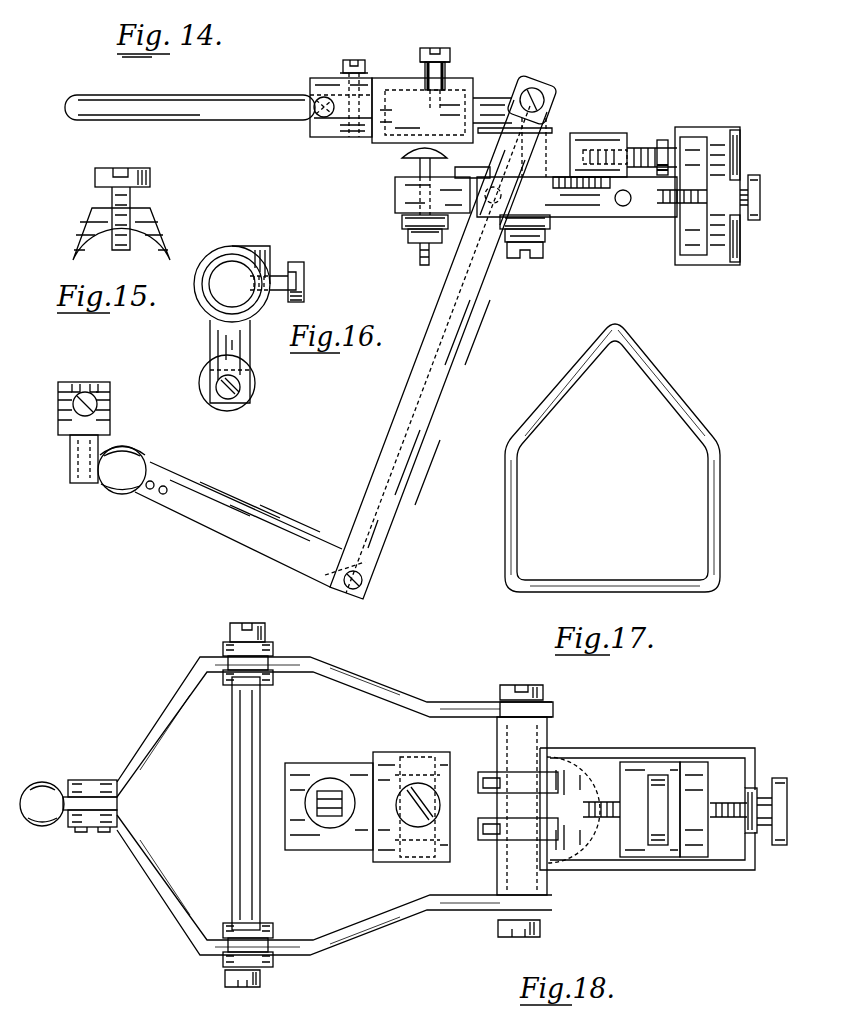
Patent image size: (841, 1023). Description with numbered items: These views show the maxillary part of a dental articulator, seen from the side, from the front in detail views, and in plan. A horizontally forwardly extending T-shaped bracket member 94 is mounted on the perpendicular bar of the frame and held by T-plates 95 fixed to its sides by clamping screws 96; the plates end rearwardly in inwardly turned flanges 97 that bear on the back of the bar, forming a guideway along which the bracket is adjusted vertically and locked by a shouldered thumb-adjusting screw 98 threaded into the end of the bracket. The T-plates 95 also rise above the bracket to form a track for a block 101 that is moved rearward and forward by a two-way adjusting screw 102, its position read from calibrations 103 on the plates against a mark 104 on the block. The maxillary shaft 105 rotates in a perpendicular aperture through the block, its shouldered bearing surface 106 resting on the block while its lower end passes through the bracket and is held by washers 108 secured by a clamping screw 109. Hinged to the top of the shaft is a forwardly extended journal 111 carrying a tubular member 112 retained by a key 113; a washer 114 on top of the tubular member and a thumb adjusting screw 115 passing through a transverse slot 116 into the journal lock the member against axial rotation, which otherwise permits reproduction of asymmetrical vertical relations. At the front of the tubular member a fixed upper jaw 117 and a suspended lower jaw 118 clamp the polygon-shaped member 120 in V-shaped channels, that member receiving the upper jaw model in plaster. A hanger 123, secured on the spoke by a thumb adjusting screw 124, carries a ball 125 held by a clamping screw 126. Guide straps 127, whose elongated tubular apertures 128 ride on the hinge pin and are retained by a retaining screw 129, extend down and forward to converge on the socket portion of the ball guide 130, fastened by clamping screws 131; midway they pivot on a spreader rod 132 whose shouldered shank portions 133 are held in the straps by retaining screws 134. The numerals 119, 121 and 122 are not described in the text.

In FIG. 14, the T-shaped bracket member 94 is at (405, 190).
In FIG. 18, the T-shaped bracket member 94 is at (694, 858).
In FIG. 14, the T-plates 95 is at (705, 130).
In FIG. 18, the T-plates 95 is at (672, 752).
In FIG. 14, the clamping screws 96 is at (625, 207).
In FIG. 14, the flanges 97 is at (740, 150).
In FIG. 18, the flanges 97 is at (752, 785).
In FIG. 14, the thumb-adjusting screw 98 is at (760, 185).
In FIG. 18, the thumb-adjusting screw 98 is at (780, 770).
In FIG. 14, the block 101 is at (615, 133).
In FIG. 14, the two-way adjusting screw 102 is at (662, 140).
In FIG. 18, the two-way adjusting screw 102 is at (658, 845).
In FIG. 14, the calibrations 103 is at (595, 190).
In FIG. 14, the mark 104 is at (574, 140).
In FIG. 14, the maxillary shaft 105 is at (558, 150).
In FIG. 18, the shouldered bearing surface 106 is at (558, 866).
In FIG. 14, the washers 108 is at (550, 222).
In FIG. 14, the clamping screw 109 is at (543, 254).
In FIG. 14, the journal 111 is at (478, 104).
In FIG. 14, the tubular member 112 is at (383, 86).
In FIG. 14, the key 113 is at (476, 140).
In FIG. 14, the washer 114 is at (446, 75).
In FIG. 15, the washer 114 is at (140, 230).
In FIG. 14, the thumb adjusting screw 115 is at (450, 50).
In FIG. 15, the thumb adjusting screw 115 is at (152, 172).
In FIG. 18, the thumb adjusting screw 115 is at (418, 830).
In FIG. 18, the transverse slot 116 is at (405, 830).
In FIG. 14, the upper jaw 117 is at (310, 80).
In FIG. 18, the upper jaw 117 is at (340, 842).
In FIG. 14, the lower jaw 118 is at (362, 125).
In FIG. 14, the set screw 119 is at (362, 64).
In FIG. 18, the set screw 119 is at (330, 790).
In FIG. 14, the polygon-shaped member 120 is at (158, 95).
In FIG. 17, the polygon-shaped member 120 is at (506, 572).
In FIG. 14, the knob 121 is at (420, 167).
In FIG. 14, the lock nut 122 is at (402, 236).
In FIG. 14, the hanger 123 is at (98, 432).
In FIG. 16, the hanger 123 is at (280, 236).
In FIG. 14, the thumb adjusting screw 124 is at (98, 390).
In FIG. 16, the thumb adjusting screw 124 is at (305, 292).
In FIG. 14, the ball 125 is at (115, 452).
In FIG. 16, the ball 125 is at (240, 385).
In FIG. 14, the clamping screw 126 is at (70, 466).
In FIG. 16, the clamping screw 126 is at (245, 405).
In FIG. 14, the guide straps 127 is at (415, 452).
In FIG. 18, the guide straps 127 is at (162, 721).
In FIG. 18, the elongated tubular apertures 128 is at (548, 738).
In FIG. 14, the retaining screw 129 is at (553, 88).
In FIG. 18, the retaining screw 129 is at (520, 684).
In FIG. 14, the ball guide socket 130 is at (118, 494).
In FIG. 18, the ball guide socket 130 is at (64, 782).
In FIG. 14, the clamping screws 131 is at (163, 495).
In FIG. 18, the clamping screws 131 is at (92, 832).
In FIG. 18, the spreader rod 132 is at (238, 797).
In FIG. 18, the shouldered shank portion 133 is at (273, 680).
In FIG. 18, the retaining screws 134 is at (258, 626).